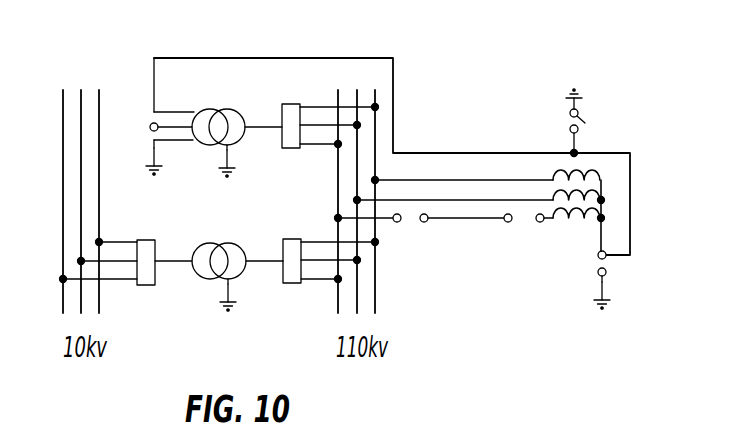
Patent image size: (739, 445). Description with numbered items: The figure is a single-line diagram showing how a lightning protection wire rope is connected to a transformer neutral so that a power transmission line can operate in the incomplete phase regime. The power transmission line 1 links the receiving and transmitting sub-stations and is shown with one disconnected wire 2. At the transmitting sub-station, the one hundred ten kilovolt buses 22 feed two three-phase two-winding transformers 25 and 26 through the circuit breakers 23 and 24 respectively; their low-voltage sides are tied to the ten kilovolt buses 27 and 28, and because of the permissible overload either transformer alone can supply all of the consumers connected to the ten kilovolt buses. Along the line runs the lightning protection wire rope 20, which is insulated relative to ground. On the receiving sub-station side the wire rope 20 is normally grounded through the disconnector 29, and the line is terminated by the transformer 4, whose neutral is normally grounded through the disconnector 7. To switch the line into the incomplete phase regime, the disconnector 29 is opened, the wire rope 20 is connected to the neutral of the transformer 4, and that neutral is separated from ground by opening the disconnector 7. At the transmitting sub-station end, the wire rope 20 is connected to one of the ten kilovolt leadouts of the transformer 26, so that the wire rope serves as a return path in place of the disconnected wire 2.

The power transmission line 1 is at (420, 200).
The disconnected wire 2 is at (447, 220).
The transformer 4 is at (579, 215).
The disconnector 7 is at (605, 288).
The lightning protection wire rope 20 is at (496, 151).
The buses 22 is at (338, 306).
The circuit breaker 23 is at (292, 283).
The circuit breaker 24 is at (300, 94).
The transformer 25 is at (210, 244).
The transformer 26 is at (210, 108).
The buses 27 is at (147, 285).
The buses 28 is at (98, 99).
The disconnector 29 is at (597, 123).